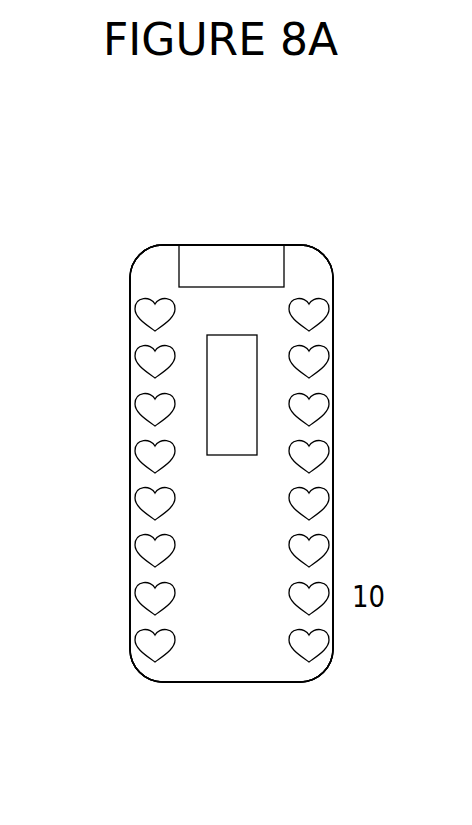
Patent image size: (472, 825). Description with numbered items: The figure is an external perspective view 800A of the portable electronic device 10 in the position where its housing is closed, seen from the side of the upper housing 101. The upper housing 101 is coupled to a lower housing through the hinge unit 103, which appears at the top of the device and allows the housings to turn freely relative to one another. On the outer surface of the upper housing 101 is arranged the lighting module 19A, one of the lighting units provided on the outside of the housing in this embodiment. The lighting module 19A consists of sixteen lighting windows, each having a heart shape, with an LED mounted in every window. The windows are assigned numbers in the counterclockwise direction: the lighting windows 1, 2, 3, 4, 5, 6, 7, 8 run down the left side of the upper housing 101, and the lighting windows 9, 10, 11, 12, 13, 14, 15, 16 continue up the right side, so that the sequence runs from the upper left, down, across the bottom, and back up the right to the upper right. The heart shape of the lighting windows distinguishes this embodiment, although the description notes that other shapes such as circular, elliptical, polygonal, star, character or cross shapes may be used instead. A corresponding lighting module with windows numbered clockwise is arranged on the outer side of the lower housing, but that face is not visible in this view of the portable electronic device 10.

The external perspective view 800A is at (202, 233).
The hinge unit 103 is at (247, 255).
The lighting module 19A is at (148, 275).
The upper housing 101 is at (315, 268).
The portable electronic device 10 is at (225, 723).
The lighting window 1 is at (134, 313).
The lighting window 2 is at (134, 360).
The lighting window 3 is at (134, 408).
The lighting window 4 is at (134, 455).
The lighting window 5 is at (134, 502).
The lighting window 6 is at (134, 549).
The lighting window 7 is at (134, 597).
The lighting window 8 is at (134, 644).
The lighting window 9 is at (330, 644).
The lighting window 11 is at (337, 549).
The lighting window 12 is at (337, 502).
The lighting window 13 is at (337, 455).
The lighting window 14 is at (337, 408).
The lighting window 15 is at (337, 360).
The lighting window 16 is at (337, 313).